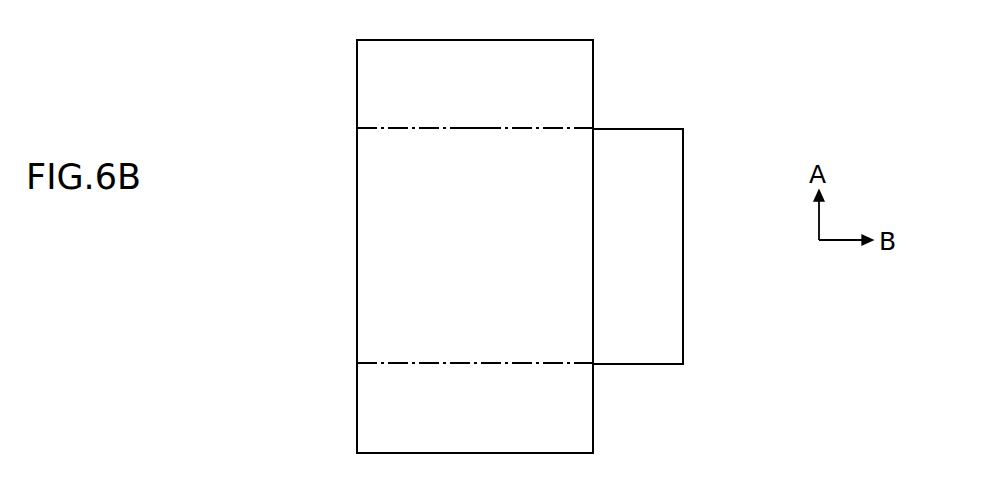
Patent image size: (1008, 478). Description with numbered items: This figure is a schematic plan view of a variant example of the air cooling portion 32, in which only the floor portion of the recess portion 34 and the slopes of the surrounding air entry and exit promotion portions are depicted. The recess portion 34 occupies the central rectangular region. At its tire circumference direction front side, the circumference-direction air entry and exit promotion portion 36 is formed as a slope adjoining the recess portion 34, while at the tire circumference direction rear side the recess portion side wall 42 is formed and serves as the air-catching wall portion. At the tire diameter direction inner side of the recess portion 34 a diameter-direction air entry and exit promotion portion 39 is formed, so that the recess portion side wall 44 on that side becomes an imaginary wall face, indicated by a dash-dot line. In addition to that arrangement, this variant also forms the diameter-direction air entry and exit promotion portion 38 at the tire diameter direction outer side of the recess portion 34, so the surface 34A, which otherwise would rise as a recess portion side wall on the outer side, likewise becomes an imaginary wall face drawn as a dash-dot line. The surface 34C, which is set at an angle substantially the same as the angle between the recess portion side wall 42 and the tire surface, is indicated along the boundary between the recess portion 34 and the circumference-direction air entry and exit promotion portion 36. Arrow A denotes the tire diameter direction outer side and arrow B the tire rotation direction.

The air cooling portion 32 is at (281, 63).
The recess portion 34 is at (357, 155).
The surface 34A is at (464, 128).
The surface 34C is at (593, 300).
The circumference-direction air entry and exit promotion portion 36 is at (684, 238).
The diameter-direction air entry and exit promotion portion 38 is at (594, 88).
The diameter-direction air entry and exit promotion portion 39 is at (357, 413).
The recess portion side wall 42 is at (358, 248).
The recess portion side wall 44 is at (420, 363).